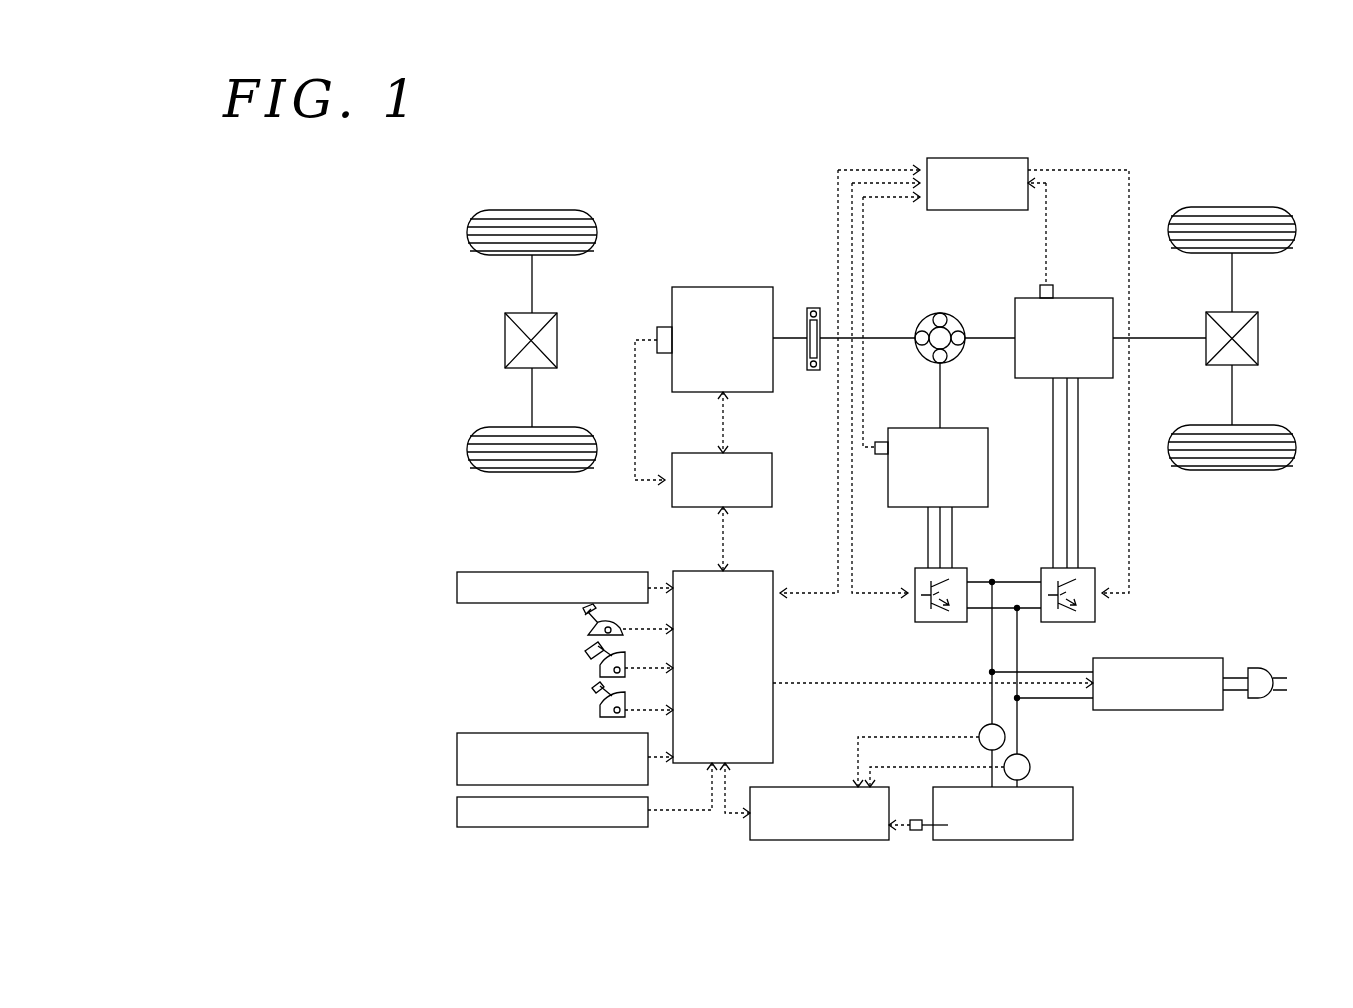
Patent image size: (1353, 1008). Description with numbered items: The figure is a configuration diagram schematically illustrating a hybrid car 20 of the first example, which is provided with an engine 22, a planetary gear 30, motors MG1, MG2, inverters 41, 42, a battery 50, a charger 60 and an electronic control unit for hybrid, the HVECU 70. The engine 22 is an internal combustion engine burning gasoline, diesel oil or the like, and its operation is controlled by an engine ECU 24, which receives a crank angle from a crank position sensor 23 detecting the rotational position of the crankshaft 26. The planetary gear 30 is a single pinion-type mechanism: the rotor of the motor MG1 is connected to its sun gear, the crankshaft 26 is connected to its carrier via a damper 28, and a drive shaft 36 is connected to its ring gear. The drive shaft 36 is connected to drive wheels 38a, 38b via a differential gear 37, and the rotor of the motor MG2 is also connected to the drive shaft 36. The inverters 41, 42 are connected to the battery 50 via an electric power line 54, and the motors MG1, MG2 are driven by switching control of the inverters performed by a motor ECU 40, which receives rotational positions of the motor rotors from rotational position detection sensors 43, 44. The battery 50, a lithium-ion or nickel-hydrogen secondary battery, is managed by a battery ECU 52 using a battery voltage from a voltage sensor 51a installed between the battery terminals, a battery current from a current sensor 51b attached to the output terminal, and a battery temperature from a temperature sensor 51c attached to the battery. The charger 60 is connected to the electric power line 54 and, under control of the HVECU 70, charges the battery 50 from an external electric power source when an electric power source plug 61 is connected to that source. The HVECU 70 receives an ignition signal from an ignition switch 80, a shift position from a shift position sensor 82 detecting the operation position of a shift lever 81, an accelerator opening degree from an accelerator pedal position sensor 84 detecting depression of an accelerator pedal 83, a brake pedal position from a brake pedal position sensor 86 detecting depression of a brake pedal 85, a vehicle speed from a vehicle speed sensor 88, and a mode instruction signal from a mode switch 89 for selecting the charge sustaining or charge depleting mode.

The hybrid car 20 is at (1108, 125).
The engine 22 is at (745, 287).
The crank position sensor 23 is at (665, 327).
The engine ECU 24 is at (745, 453).
The crankshaft 26 is at (783, 335).
The damper 28 is at (811, 372).
The planetary gear 30 is at (940, 313).
The drive shaft 36 is at (1170, 338).
The differential gear 37 is at (1237, 312).
The drive wheel 38a is at (1227, 207).
The drive wheel 38b is at (1228, 470).
The motor ECU 40 is at (1000, 158).
The inverter 41 is at (963, 568).
The inverter 42 is at (1090, 568).
The rotational position detection sensor 43 is at (880, 442).
The rotational position detection sensor 44 is at (1043, 285).
The battery 50 is at (1073, 812).
The voltage sensor 51a is at (1030, 767).
The current sensor 51b is at (1005, 737).
The temperature sensor 51c is at (914, 832).
The battery ECU 52 is at (835, 787).
The electric power line 54 is at (1002, 600).
The charger 60 is at (1155, 658).
The electric power source plug 61 is at (1262, 665).
The HVECU 70 is at (748, 571).
The ignition switch 80 is at (457, 587).
The shift lever 81 is at (583, 616).
The shift position sensor 82 is at (600, 630).
The accelerator pedal 83 is at (580, 651).
The accelerator pedal position sensor 84 is at (600, 672).
The brake pedal 85 is at (590, 692).
The brake pedal position sensor 86 is at (600, 712).
The vehicle speed sensor 88 is at (457, 758).
The mode switch 89 is at (457, 811).
The motor MG1 is at (965, 428).
The motor MG2 is at (1080, 298).